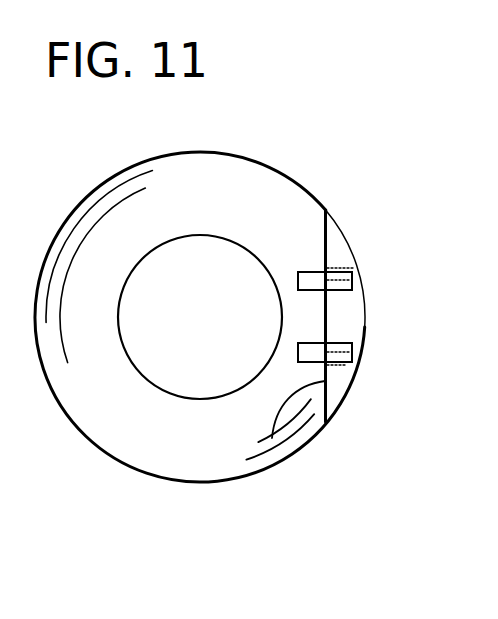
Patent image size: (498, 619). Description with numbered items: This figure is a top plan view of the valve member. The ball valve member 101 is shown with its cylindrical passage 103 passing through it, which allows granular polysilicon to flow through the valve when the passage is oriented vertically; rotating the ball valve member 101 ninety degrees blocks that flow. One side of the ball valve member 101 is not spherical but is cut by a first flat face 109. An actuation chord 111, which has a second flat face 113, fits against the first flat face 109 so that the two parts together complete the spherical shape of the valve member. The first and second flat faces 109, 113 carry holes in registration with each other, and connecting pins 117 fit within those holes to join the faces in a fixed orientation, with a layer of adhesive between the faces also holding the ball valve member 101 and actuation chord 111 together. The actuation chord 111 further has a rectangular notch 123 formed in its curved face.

The ball valve member 101 is at (140, 478).
The cylindrical passage 103 is at (150, 257).
The first flat face 109 is at (328, 240).
The actuation chord 111 is at (336, 386).
The second flat face 113 is at (274, 470).
The connecting pins 117 is at (340, 295).
The rectangular notch 123 is at (355, 365).